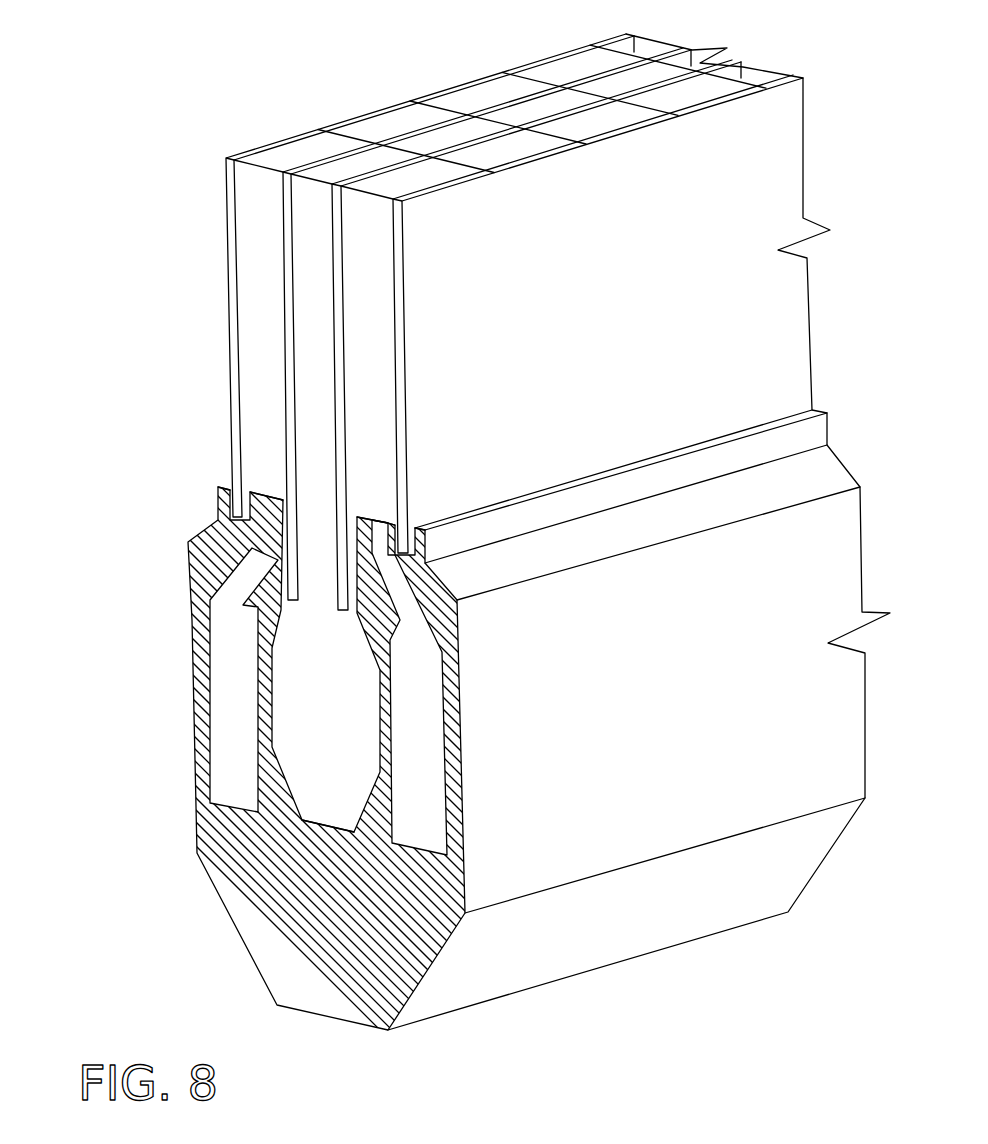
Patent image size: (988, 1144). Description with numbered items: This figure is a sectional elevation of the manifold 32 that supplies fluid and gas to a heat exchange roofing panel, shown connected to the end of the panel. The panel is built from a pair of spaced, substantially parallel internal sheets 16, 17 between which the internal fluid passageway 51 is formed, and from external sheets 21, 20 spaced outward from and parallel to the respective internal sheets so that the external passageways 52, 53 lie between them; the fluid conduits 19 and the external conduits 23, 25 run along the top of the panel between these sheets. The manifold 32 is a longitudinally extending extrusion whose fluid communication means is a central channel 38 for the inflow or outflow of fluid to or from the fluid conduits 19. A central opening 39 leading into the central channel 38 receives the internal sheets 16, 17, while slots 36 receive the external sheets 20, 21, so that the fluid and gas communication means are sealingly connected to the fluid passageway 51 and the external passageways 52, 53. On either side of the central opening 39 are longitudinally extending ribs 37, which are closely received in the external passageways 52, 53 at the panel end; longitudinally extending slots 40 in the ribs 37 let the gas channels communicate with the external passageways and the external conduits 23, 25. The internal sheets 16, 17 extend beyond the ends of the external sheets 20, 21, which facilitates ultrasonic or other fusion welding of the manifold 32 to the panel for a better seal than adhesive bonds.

The internal sheet 16 is at (346, 356).
The internal sheet 17 is at (288, 322).
The fluid conduit 19 is at (572, 90).
The external sheet 20 is at (232, 378).
The external sheet 21 is at (406, 378).
The external conduit 23 is at (584, 130).
The external conduit 25 is at (356, 128).
The manifold 32 is at (181, 908).
The slot 36 is at (214, 473).
The rib 37 is at (272, 480).
The central channel 38 is at (344, 716).
The central opening 39 is at (322, 594).
The longitudinally extending slot 40 is at (188, 580).
The internal fluid passageway 51 is at (331, 242).
The external passageway 52 is at (386, 256).
The external passageway 53 is at (272, 222).